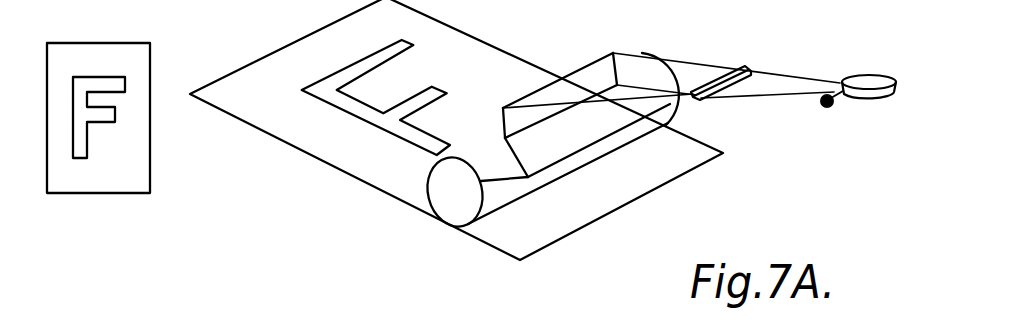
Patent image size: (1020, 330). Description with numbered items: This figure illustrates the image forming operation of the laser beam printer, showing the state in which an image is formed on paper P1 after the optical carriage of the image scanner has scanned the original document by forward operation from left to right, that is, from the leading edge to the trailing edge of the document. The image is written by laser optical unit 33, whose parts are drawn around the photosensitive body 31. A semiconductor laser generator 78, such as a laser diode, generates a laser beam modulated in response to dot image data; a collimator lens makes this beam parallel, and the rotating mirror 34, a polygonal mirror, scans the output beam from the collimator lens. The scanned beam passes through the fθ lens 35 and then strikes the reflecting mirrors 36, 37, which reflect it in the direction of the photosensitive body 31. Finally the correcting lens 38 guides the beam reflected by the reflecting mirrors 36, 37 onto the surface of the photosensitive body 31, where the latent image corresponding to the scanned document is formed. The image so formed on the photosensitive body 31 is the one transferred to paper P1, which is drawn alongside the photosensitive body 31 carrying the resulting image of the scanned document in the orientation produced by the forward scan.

The photosensitive body 31 is at (457, 217).
The laser optical unit 33 is at (762, 97).
The rotating mirror 34 is at (867, 75).
The fθ lens 35 is at (738, 64).
The reflecting mirror 36 is at (603, 53).
The reflecting mirror 37 is at (620, 62).
The correcting lens 38 is at (637, 121).
The semiconductor laser generator 78 is at (829, 106).
The paper P1 is at (123, 193).